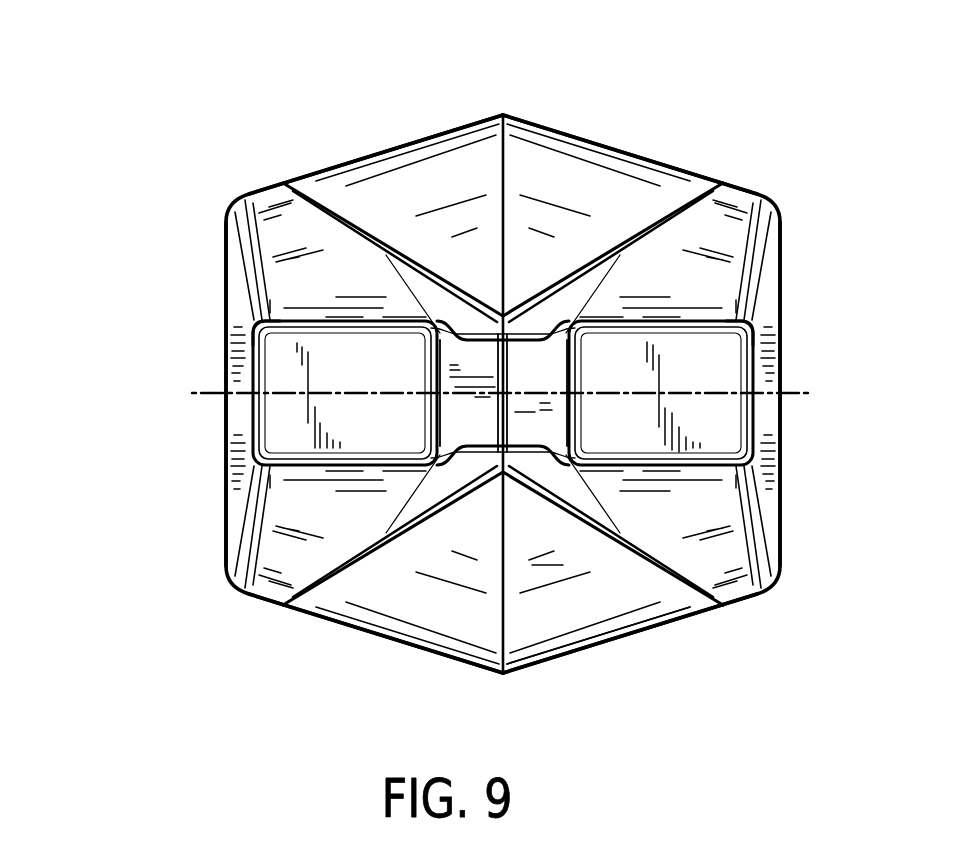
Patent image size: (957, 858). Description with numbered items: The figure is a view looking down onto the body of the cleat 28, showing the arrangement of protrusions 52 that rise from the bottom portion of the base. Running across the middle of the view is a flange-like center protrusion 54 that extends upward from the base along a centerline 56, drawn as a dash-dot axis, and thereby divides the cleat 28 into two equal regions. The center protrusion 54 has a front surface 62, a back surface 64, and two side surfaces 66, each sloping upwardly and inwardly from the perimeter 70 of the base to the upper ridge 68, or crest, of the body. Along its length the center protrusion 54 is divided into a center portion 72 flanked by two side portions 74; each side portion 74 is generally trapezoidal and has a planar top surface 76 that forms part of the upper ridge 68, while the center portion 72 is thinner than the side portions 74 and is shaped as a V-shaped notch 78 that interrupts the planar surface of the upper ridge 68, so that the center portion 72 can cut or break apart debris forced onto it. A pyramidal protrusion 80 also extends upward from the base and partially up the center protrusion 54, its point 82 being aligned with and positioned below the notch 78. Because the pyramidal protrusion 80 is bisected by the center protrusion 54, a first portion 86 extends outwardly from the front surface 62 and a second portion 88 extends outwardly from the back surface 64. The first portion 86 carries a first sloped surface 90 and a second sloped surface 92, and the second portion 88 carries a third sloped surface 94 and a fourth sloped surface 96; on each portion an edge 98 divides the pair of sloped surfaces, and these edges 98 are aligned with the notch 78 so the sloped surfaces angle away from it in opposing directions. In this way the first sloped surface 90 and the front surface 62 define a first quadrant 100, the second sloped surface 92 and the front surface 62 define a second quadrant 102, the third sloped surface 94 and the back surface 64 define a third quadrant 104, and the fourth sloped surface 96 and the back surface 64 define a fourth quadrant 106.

The cleat 28 is at (118, 195).
The arrangement of protrusions 52 is at (383, 586).
The center protrusion 54 is at (246, 331).
The centerline 56 is at (200, 400).
The front surface 62 is at (306, 521).
The back surface 64 is at (322, 284).
The side surfaces 66 is at (229, 426).
The upper ridge 68 is at (759, 329).
The perimeter 70 is at (632, 630).
The center portion 72 is at (518, 303).
The side portion 74 is at (326, 320).
The top surface 76 is at (350, 381).
The V-shaped notch 78 is at (452, 434).
The pyramidal protrusion 80 is at (589, 166).
The point 82 is at (491, 337).
The first portion 86 is at (549, 668).
The second portion 88 is at (563, 110).
The first sloped surface 90 is at (406, 556).
The second sloped surface 92 is at (530, 556).
The third sloped surface 94 is at (396, 246).
The fourth sloped surface 96 is at (582, 246).
The edge 98 is at (507, 153).
The first quadrant 100 is at (338, 651).
The second quadrant 102 is at (693, 634).
The third quadrant 104 is at (335, 128).
The fourth quadrant 106 is at (688, 130).